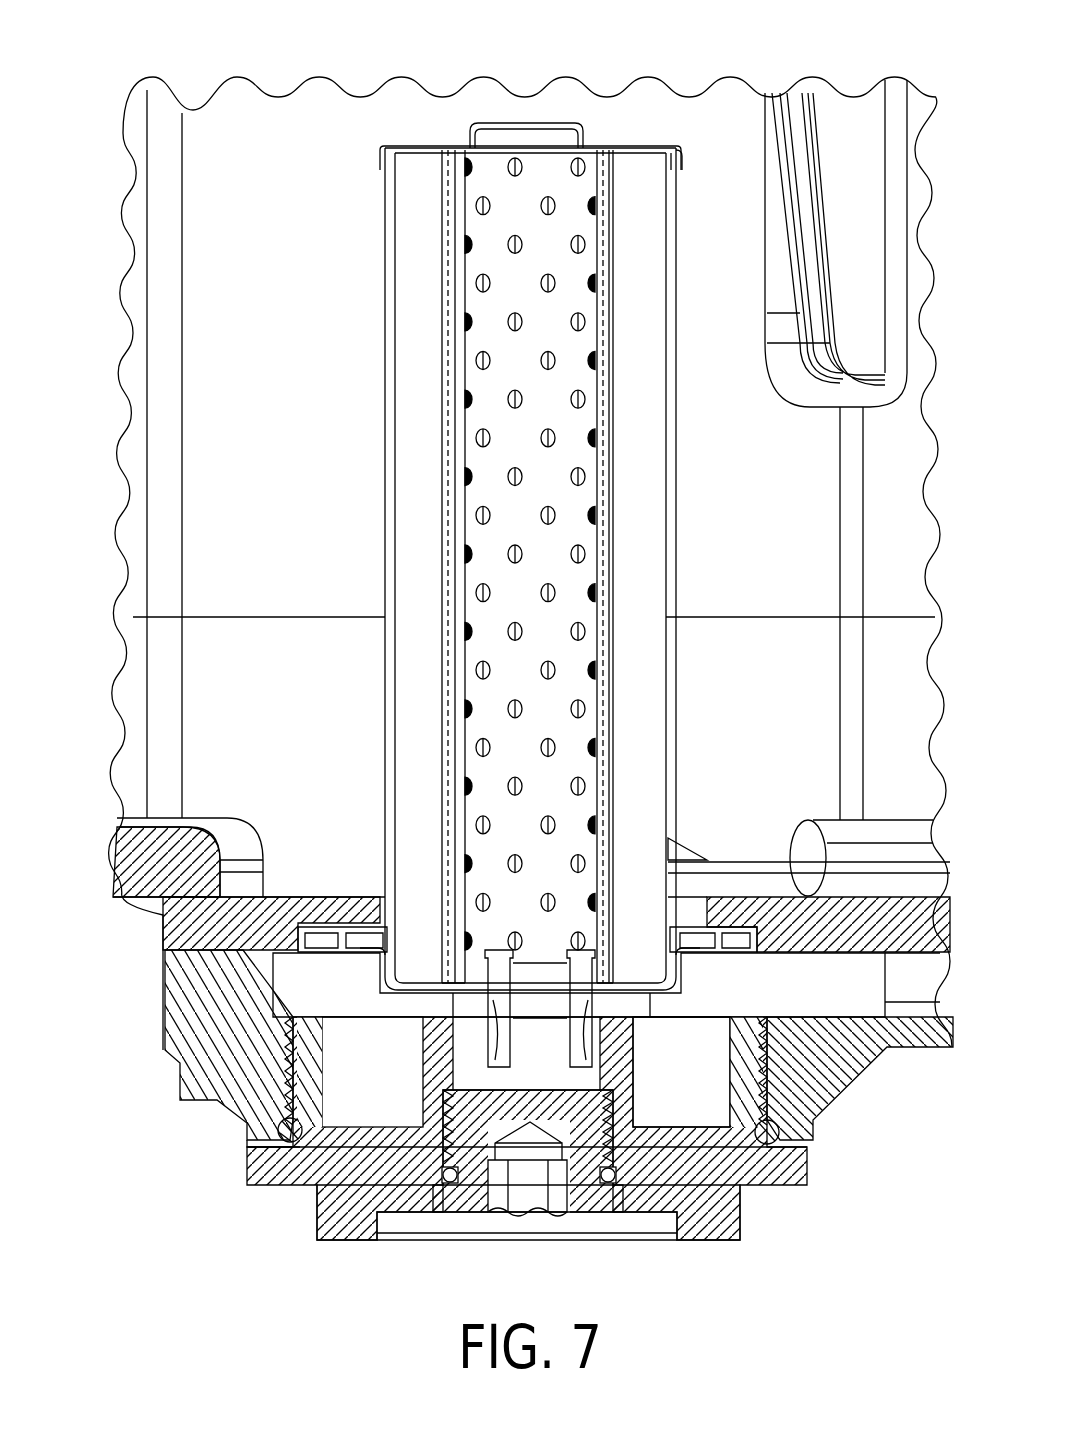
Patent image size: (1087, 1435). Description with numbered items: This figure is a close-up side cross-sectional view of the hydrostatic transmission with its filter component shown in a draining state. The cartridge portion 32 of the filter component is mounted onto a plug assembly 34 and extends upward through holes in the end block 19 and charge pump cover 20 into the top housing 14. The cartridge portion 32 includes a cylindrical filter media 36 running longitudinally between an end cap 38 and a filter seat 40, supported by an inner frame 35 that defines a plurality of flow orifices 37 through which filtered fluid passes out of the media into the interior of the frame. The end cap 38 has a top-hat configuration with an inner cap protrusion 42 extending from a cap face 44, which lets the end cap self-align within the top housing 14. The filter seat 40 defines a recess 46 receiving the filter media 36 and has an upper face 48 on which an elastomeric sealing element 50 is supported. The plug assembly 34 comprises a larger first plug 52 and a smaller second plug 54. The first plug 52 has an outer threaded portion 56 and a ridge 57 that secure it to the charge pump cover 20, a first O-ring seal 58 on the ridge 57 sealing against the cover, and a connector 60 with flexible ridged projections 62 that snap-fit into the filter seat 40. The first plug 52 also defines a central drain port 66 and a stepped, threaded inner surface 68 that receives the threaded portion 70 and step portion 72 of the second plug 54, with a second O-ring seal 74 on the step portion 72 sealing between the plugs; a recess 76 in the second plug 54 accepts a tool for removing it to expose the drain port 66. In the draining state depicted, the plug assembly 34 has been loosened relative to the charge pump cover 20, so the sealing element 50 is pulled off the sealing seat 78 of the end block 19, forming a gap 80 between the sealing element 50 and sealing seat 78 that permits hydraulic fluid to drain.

The top housing 14 is at (125, 487).
The end block 19 is at (163, 923).
The charge pump cover 20 is at (163, 1017).
The cartridge portion 32 is at (770, 725).
The plug assembly 34 is at (275, 1258).
The inner frame 35 is at (572, 425).
The filter media 36 is at (670, 345).
The flow orifices 37 is at (582, 478).
The end cap 38 is at (679, 160).
The filter seat 40 is at (676, 990).
The inner cap protrusion 42 is at (502, 122).
The cap face 44 is at (618, 145).
The recess 46 is at (670, 1000).
The upper face 48 is at (690, 927).
The sealing element 50 is at (722, 915).
The first plug 52 is at (260, 1188).
The second plug 54 is at (474, 1215).
The threaded portion 56 is at (290, 1063).
The ridge 57 is at (248, 1145).
The first O-ring seal 58 is at (277, 1129).
The connector 60 is at (498, 993).
The ridged projections 62 is at (510, 943).
The drain port 66 is at (532, 1082).
The inner surface 68 is at (418, 1194).
The threaded portion 70 is at (740, 1187).
The step portion 72 is at (592, 1210).
The second O-ring seal 74 is at (612, 1182).
The recess 76 is at (528, 1192).
The sealing seat 78 is at (333, 927).
The gap 80 is at (372, 933).